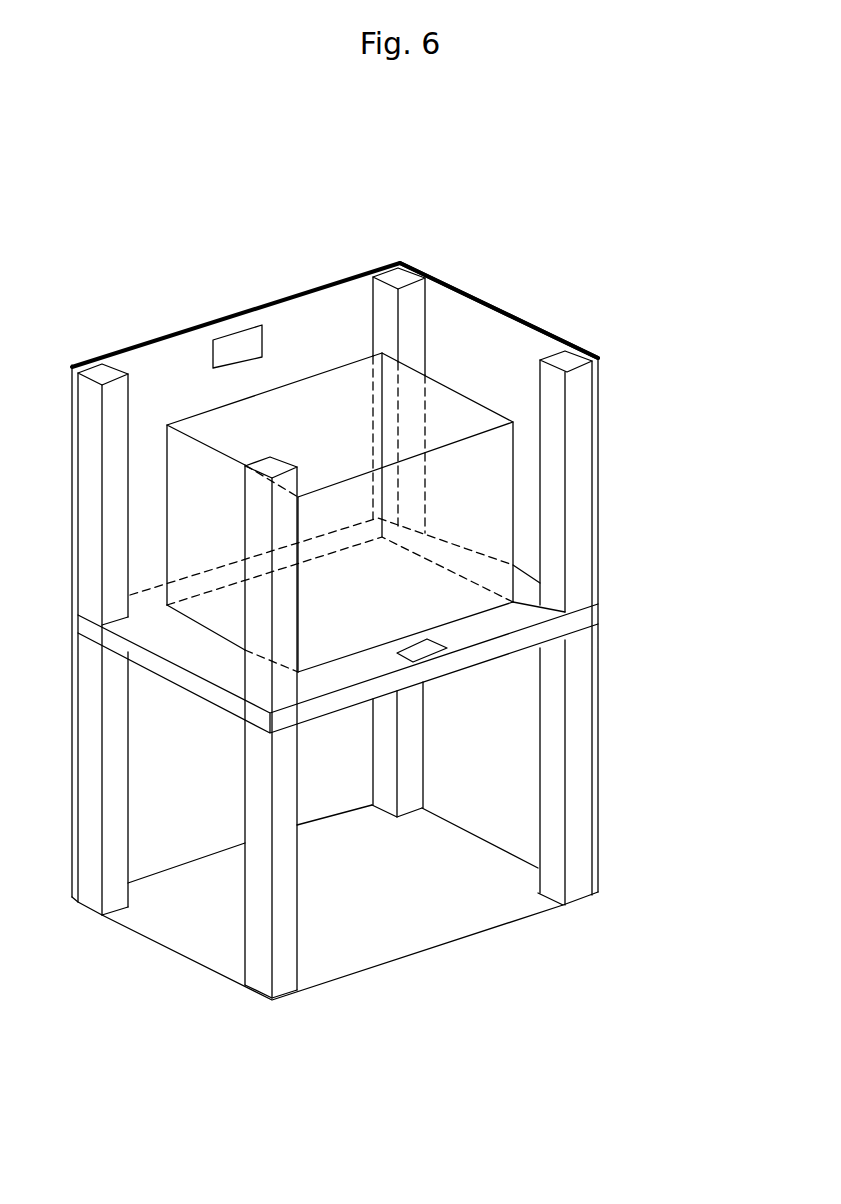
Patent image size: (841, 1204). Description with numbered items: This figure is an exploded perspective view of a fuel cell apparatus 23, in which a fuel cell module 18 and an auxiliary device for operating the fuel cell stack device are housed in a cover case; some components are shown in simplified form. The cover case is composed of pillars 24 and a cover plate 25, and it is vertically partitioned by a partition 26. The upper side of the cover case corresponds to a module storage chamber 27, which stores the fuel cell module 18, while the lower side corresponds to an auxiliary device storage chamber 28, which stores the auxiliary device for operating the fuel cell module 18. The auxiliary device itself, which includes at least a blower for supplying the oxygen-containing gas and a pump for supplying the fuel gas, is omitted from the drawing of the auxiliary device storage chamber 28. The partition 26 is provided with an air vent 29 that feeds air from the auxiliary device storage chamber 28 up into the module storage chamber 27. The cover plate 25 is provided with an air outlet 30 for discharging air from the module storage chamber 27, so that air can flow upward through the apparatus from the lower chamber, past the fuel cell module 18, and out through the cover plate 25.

The fuel cell module 18 is at (455, 407).
The fuel cell apparatus 23 is at (278, 209).
The pillars 24 is at (102, 367).
The cover plate 25 is at (443, 280).
The partition 26 is at (580, 620).
The module storage chamber 27 is at (463, 340).
The auxiliary device storage chamber 28 is at (170, 775).
The air vent 29 is at (437, 648).
The air outlet 30 is at (232, 347).